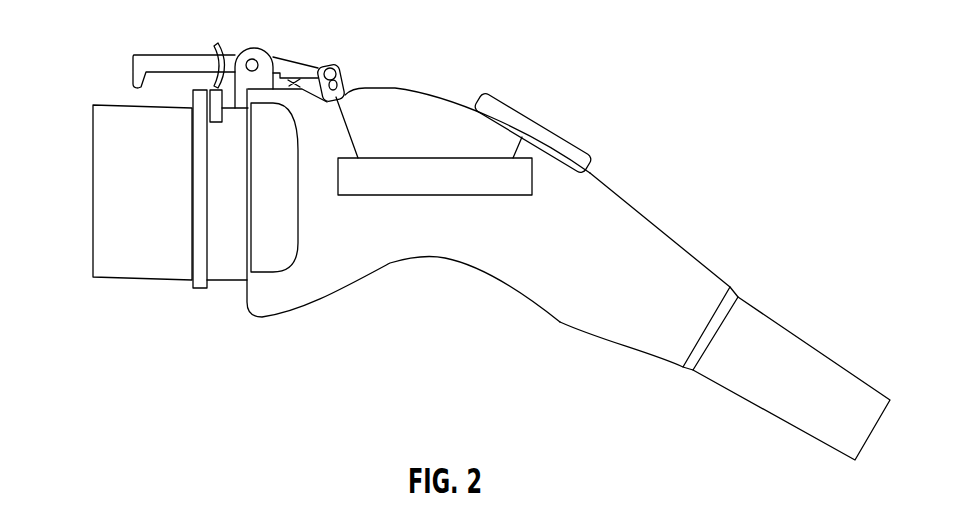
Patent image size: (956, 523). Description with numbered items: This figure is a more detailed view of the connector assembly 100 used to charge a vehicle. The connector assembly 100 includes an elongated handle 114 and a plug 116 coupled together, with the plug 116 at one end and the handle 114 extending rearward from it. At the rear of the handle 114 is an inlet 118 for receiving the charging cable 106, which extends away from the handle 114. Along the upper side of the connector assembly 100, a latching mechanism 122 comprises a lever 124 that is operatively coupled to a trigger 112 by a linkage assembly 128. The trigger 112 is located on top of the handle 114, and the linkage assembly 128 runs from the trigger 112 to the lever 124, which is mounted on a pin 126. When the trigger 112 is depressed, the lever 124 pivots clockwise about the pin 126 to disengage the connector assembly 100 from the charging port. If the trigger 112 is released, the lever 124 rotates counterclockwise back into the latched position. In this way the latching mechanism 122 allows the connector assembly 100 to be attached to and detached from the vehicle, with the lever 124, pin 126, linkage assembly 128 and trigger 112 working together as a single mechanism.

The connector assembly 100 is at (452, 67).
The charging cable 106 is at (822, 350).
The trigger 112 is at (543, 123).
The elongated handle 114 is at (663, 247).
The plug 116 is at (93, 188).
The inlet 118 is at (737, 290).
The latching mechanism 122 is at (144, 42).
The lever 124 is at (178, 65).
The pin 126 is at (252, 62).
The linkage assembly 128 is at (460, 197).